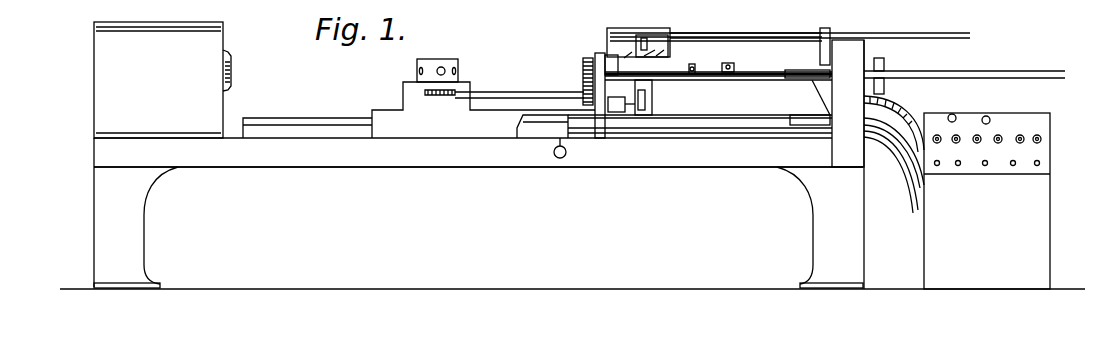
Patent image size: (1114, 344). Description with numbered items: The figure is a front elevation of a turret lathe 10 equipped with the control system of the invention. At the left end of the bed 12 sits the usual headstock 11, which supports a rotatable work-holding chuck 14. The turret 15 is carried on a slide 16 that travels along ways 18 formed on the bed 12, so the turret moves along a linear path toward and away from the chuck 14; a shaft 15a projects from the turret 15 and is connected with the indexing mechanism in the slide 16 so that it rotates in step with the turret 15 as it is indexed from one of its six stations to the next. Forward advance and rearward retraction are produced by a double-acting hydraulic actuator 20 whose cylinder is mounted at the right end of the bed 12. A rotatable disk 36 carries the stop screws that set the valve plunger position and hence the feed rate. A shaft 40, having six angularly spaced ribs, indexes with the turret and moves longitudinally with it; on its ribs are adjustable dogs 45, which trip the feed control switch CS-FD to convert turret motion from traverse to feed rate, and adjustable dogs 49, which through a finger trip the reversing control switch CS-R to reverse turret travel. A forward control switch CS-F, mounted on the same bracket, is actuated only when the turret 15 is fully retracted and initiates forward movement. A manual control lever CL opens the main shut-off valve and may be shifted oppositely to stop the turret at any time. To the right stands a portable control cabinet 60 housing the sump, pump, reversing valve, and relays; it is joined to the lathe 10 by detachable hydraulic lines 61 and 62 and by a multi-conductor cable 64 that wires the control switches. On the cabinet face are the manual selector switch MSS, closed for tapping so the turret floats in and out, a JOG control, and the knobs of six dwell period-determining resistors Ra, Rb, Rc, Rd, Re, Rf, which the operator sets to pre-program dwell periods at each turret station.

The turret lathe 10 is at (402, 172).
The headstock 11 is at (112, 97).
The bed 12 is at (292, 167).
The work-holding chuck 14 is at (231, 62).
The turret 15 is at (442, 58).
The turret shaft 15a is at (490, 92).
The slide 16 is at (392, 110).
The ways 18 is at (316, 110).
The double-acting hydraulic actuator 20 is at (711, 96).
The rotatable disk 36 is at (880, 56).
The shaft 40 is at (780, 80).
The dog 45 is at (698, 58).
The dog 49 is at (732, 62).
The portable control cabinet 60 is at (1056, 205).
The detachable hydraulic line 61 is at (908, 142).
The detachable hydraulic line 62 is at (910, 165).
The multi-conductor cable 64 is at (915, 100).
The manual control lever CL is at (560, 158).
The feed control switch CS-FD is at (645, 38).
The reversing control switch CS-R is at (690, 40).
The forward control switch CS-F is at (652, 95).
The manual selector switch MSS is at (962, 100).
The jog button JOG is at (989, 116).
The dwell period-determining resistor Ra is at (937, 143).
The dwell period-determining resistor Rb is at (956, 143).
The dwell period-determining resistor Rc is at (977, 143).
The dwell period-determining resistor Rd is at (1000, 135).
The dwell period-determining resistor Re is at (1023, 135).
The dwell period-determining resistor Rf is at (1041, 141).